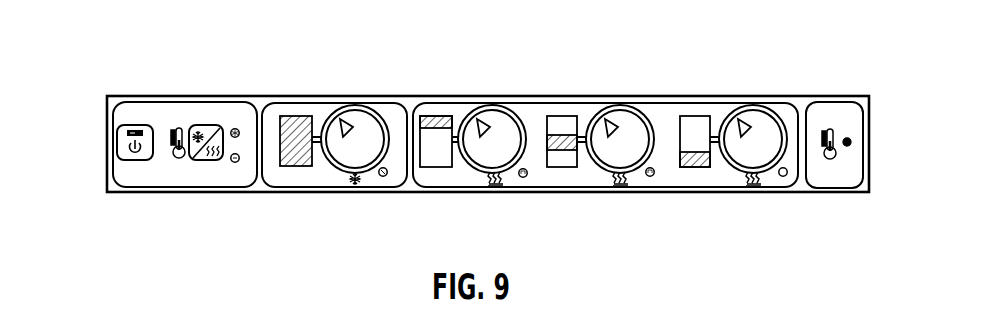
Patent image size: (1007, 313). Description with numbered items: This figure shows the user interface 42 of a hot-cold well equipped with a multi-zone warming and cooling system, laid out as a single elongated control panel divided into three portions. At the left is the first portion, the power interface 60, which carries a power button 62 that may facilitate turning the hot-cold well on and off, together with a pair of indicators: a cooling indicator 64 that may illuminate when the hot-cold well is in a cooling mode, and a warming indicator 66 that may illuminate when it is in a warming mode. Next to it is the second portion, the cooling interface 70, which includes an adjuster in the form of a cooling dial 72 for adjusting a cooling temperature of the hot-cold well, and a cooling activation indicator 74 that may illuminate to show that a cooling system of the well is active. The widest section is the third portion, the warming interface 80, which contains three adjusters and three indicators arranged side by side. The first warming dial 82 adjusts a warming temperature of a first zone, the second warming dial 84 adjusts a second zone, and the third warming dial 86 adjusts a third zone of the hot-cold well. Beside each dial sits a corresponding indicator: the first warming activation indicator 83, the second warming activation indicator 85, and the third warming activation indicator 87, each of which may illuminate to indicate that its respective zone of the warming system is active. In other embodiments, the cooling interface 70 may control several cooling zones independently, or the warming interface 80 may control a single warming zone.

The user interface 42 is at (128, 76).
The power interface 60 is at (193, 158).
The power button 62 is at (133, 155).
The cooling indicator 64 is at (237, 129).
The warming indicator 66 is at (236, 162).
The cooling interface 70 is at (334, 153).
The cooling dial 72 is at (364, 125).
The cooling activation indicator 74 is at (385, 176).
The warming interface 80 is at (615, 158).
The first warming dial 82 is at (508, 123).
The first warming activation indicator 83 is at (525, 177).
The second warming dial 84 is at (635, 125).
The second warming activation indicator 85 is at (652, 176).
The third warming dial 86 is at (765, 127).
The third warming activation indicator 87 is at (785, 176).